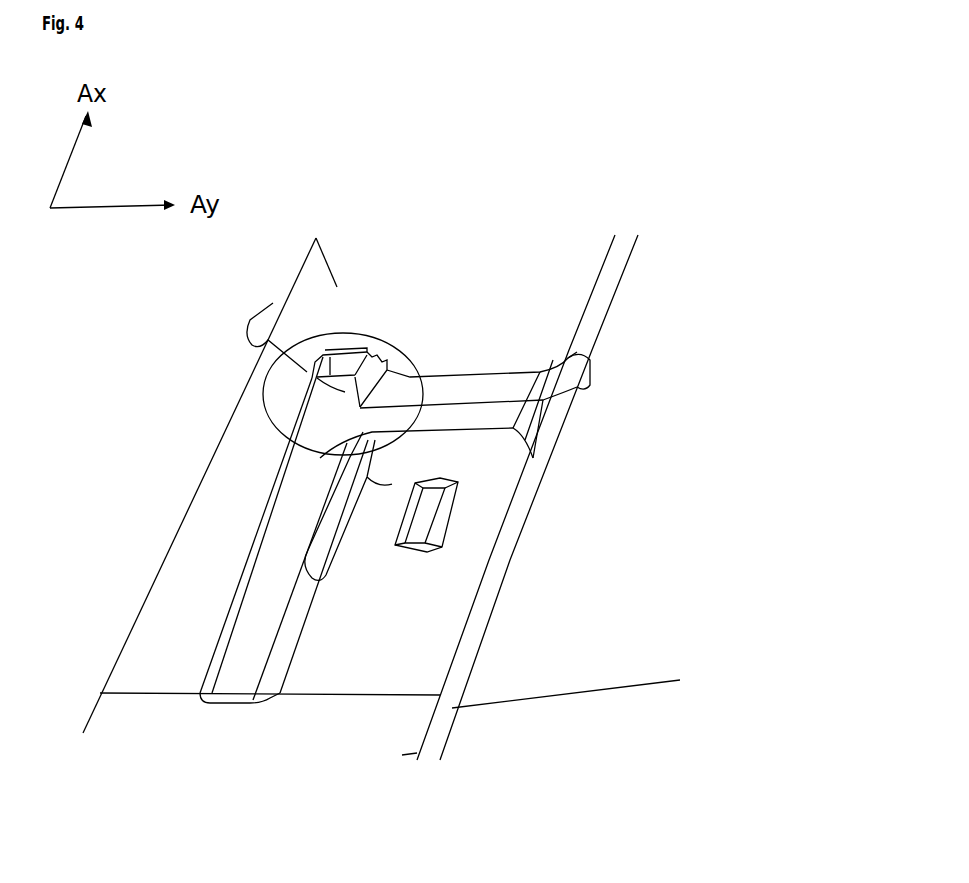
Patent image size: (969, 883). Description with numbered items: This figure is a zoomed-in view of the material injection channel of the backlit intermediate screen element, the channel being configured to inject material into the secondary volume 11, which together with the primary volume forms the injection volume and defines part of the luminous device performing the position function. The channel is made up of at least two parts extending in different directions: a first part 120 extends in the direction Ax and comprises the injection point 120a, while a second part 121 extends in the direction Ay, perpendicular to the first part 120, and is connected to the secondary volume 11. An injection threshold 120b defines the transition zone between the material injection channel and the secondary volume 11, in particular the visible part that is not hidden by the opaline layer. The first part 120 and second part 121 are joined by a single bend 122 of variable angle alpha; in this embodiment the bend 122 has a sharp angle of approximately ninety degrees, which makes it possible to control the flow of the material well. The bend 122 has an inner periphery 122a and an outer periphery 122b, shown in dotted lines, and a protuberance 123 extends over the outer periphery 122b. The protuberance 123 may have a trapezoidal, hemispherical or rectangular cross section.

The secondary volume 11 is at (315, 240).
The first part 120 is at (357, 507).
The injection point 120a is at (235, 675).
The injection threshold 120b is at (575, 420).
The second part 121 is at (480, 380).
The bend 122 is at (246, 444).
The inner periphery 122a is at (327, 580).
The outer periphery 122b is at (300, 445).
The protuberance 123 is at (278, 312).